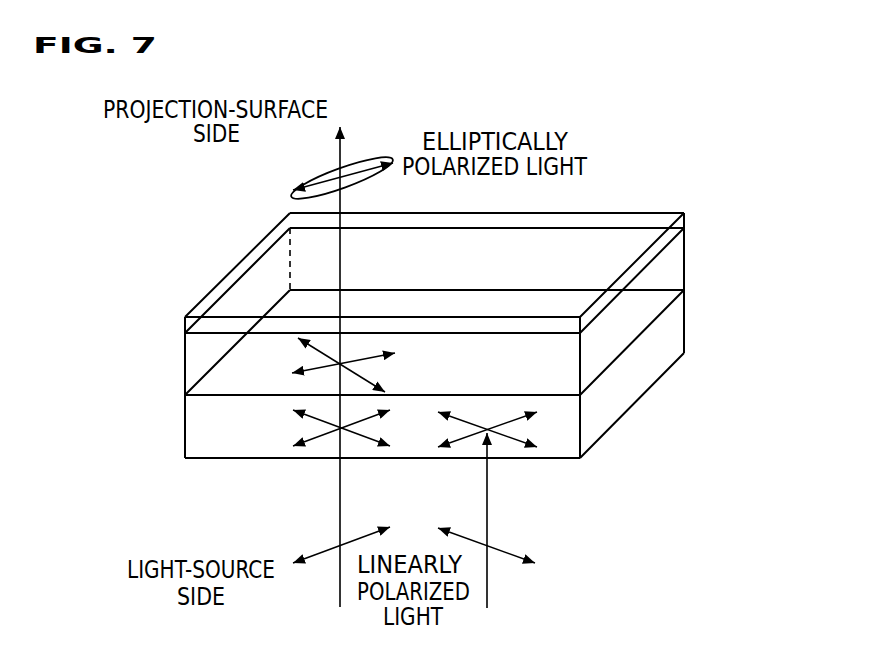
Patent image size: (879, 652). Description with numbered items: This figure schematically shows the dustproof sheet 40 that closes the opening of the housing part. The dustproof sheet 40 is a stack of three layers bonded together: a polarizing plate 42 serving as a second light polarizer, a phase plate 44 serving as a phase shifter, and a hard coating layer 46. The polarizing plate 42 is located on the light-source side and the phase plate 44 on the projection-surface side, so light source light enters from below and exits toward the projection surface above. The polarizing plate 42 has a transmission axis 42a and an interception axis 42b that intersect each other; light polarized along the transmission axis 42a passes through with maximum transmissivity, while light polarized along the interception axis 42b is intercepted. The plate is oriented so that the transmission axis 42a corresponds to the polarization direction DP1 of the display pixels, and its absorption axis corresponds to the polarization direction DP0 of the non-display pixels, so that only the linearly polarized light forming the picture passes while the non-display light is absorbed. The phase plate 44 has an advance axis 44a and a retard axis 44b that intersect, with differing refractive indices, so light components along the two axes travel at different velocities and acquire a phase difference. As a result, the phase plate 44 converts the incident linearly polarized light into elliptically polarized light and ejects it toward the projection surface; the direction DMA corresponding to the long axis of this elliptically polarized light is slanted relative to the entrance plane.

The dustproof sheet 40 is at (496, 329).
The polarizing plate 42 is at (684, 323).
The transmission axis 42a is at (313, 439).
The interception axis 42b is at (367, 439).
The phase plate 44 is at (684, 263).
The advance axis 44a is at (326, 368).
The retard axis 44b is at (323, 355).
The hard coating layer 46 is at (684, 218).
The direction corresponding to a long axis of the elliptically polarized light DMA is at (332, 181).
The polarization direction of the display pixel DP1 is at (323, 552).
The polarization direction of the non-display pixel DP0 is at (502, 547).